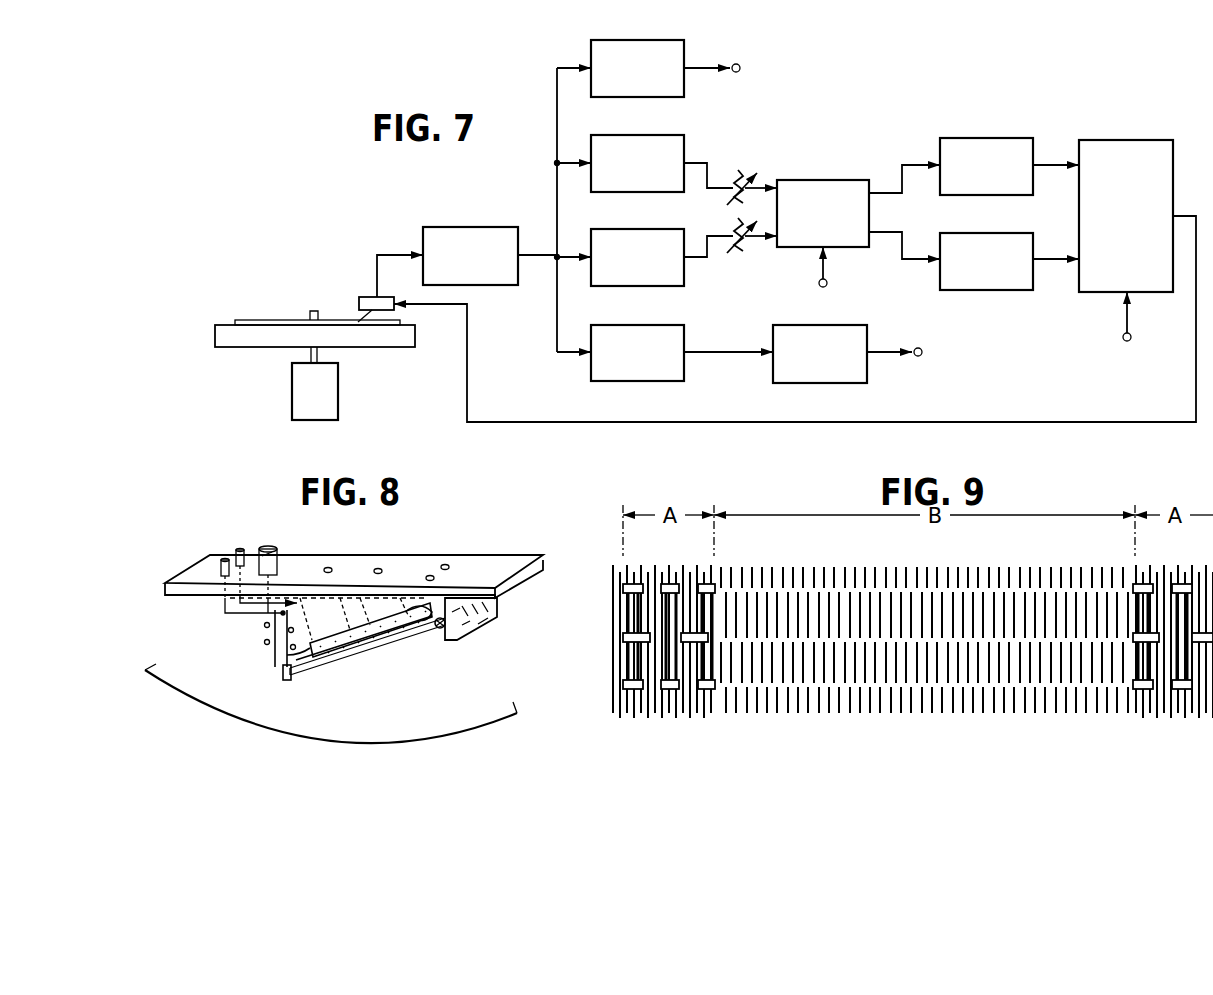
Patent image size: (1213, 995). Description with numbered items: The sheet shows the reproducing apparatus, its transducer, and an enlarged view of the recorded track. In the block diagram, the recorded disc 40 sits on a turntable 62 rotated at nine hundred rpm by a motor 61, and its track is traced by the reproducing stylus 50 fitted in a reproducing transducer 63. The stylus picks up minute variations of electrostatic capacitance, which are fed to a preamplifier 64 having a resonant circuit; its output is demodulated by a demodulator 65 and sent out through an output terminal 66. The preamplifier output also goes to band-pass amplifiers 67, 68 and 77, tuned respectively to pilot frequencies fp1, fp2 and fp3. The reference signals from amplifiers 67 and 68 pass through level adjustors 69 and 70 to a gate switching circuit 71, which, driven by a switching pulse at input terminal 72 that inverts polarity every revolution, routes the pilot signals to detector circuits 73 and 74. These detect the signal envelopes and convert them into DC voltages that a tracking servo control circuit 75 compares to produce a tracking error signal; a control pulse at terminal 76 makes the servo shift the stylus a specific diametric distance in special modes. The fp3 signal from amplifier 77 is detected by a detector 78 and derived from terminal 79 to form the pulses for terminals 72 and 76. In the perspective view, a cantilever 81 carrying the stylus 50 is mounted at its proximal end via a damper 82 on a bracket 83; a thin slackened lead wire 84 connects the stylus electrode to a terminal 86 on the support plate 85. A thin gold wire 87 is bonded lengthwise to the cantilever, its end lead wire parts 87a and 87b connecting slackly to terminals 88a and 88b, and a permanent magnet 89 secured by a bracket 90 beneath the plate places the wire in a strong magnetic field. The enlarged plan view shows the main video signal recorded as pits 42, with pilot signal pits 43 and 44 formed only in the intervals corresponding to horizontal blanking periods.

In FIG. 7, the recorded disc 40 is at (285, 320).
In FIG. 8, the recorded disc 40 is at (185, 692).
In FIG. 9, the pits 42 is at (825, 580).
In FIG. 9, the pilot signal pits 43 is at (632, 584).
In FIG. 9, the pilot signal pits 44 is at (625, 636).
In FIG. 8, the reproducing stylus 50 is at (285, 680).
In FIG. 7, the motor 61 is at (292, 390).
In FIG. 7, the turntable 62 is at (372, 347).
In FIG. 7, the reproducing transducer 63 is at (365, 297).
In FIG. 8, the reproducing transducer 63 is at (392, 533).
In FIG. 7, the preamplifier 64 is at (466, 227).
In FIG. 7, the demodulator 65 is at (614, 40).
In FIG. 7, the output terminal 66 is at (737, 63).
In FIG. 7, the amplifier 67 is at (682, 135).
In FIG. 7, the amplifier 68 is at (680, 286).
In FIG. 7, the level adjustor 69 is at (739, 170).
In FIG. 7, the level adjustor 70 is at (744, 251).
In FIG. 7, the gate switching circuit 71 is at (821, 180).
In FIG. 7, the input terminal 72 is at (828, 284).
In FIG. 7, the detector circuit 73 is at (967, 138).
In FIG. 7, the detector circuit 74 is at (990, 290).
In FIG. 7, the tracking servo control circuit 75 is at (1125, 140).
In FIG. 7, the terminal 76 is at (1129, 343).
In FIG. 7, the amplifier 77 is at (655, 381).
In FIG. 7, the detector 78 is at (862, 383).
In FIG. 7, the terminal 79 is at (923, 357).
In FIG. 8, the cantilever 81 is at (370, 652).
In FIG. 8, the damper 82 is at (445, 634).
In FIG. 8, the bracket 83 is at (498, 608).
In FIG. 8, the lead wire 84 is at (270, 628).
In FIG. 8, the support plate 85 is at (490, 573).
In FIG. 8, the terminal 86 is at (270, 549).
In FIG. 8, the gold wire 87 is at (338, 660).
In FIG. 8, the lead wire part 87a is at (415, 634).
In FIG. 8, the lead wire part 87b is at (280, 656).
In FIG. 8, the terminal 88a is at (240, 550).
In FIG. 8, the terminal 88b is at (220, 568).
In FIG. 8, the permanent magnet 89 is at (392, 632).
In FIG. 8, the bracket 90 is at (345, 606).